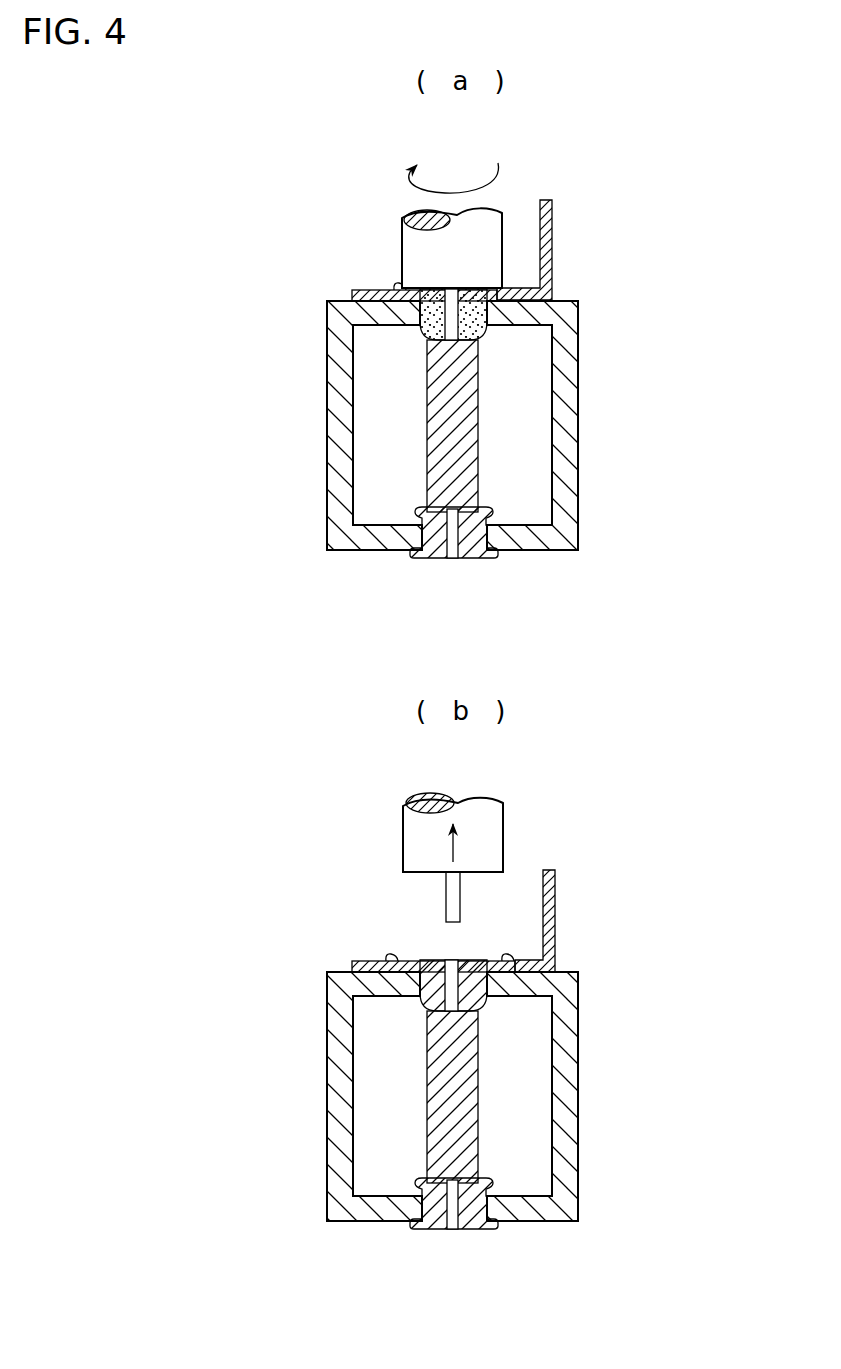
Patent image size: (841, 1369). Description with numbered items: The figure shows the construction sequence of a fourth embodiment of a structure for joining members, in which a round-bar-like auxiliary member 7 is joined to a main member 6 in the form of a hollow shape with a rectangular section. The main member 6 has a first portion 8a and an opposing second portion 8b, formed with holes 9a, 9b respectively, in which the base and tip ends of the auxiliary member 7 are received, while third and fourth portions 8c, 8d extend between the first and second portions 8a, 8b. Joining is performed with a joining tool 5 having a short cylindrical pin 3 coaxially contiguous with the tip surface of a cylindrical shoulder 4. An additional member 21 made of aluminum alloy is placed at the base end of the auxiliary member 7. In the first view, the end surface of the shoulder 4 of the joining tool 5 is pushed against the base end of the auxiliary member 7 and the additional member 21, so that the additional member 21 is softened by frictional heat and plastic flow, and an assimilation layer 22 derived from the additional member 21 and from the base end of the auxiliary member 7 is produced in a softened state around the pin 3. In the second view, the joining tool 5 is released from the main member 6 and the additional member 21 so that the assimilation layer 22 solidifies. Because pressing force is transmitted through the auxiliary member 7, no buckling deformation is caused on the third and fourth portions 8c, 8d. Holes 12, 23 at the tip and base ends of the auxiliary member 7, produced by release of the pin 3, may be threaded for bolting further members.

The pin 3 is at (428, 335).
The shoulder 4 is at (420, 243).
The joining tool 5 is at (510, 208).
The main member 6 is at (594, 318).
The auxiliary member 7 is at (448, 440).
The first portion 8a is at (514, 300).
The second portion 8b is at (540, 548).
The third portion 8c is at (342, 402).
The fourth portion 8d is at (566, 413).
The hole 9a is at (482, 332).
The hole 9b is at (487, 520).
The hole 12 is at (452, 552).
The additional member 21 is at (555, 214).
The assimilation layer 22 is at (400, 288).
The hole 23 is at (450, 966).